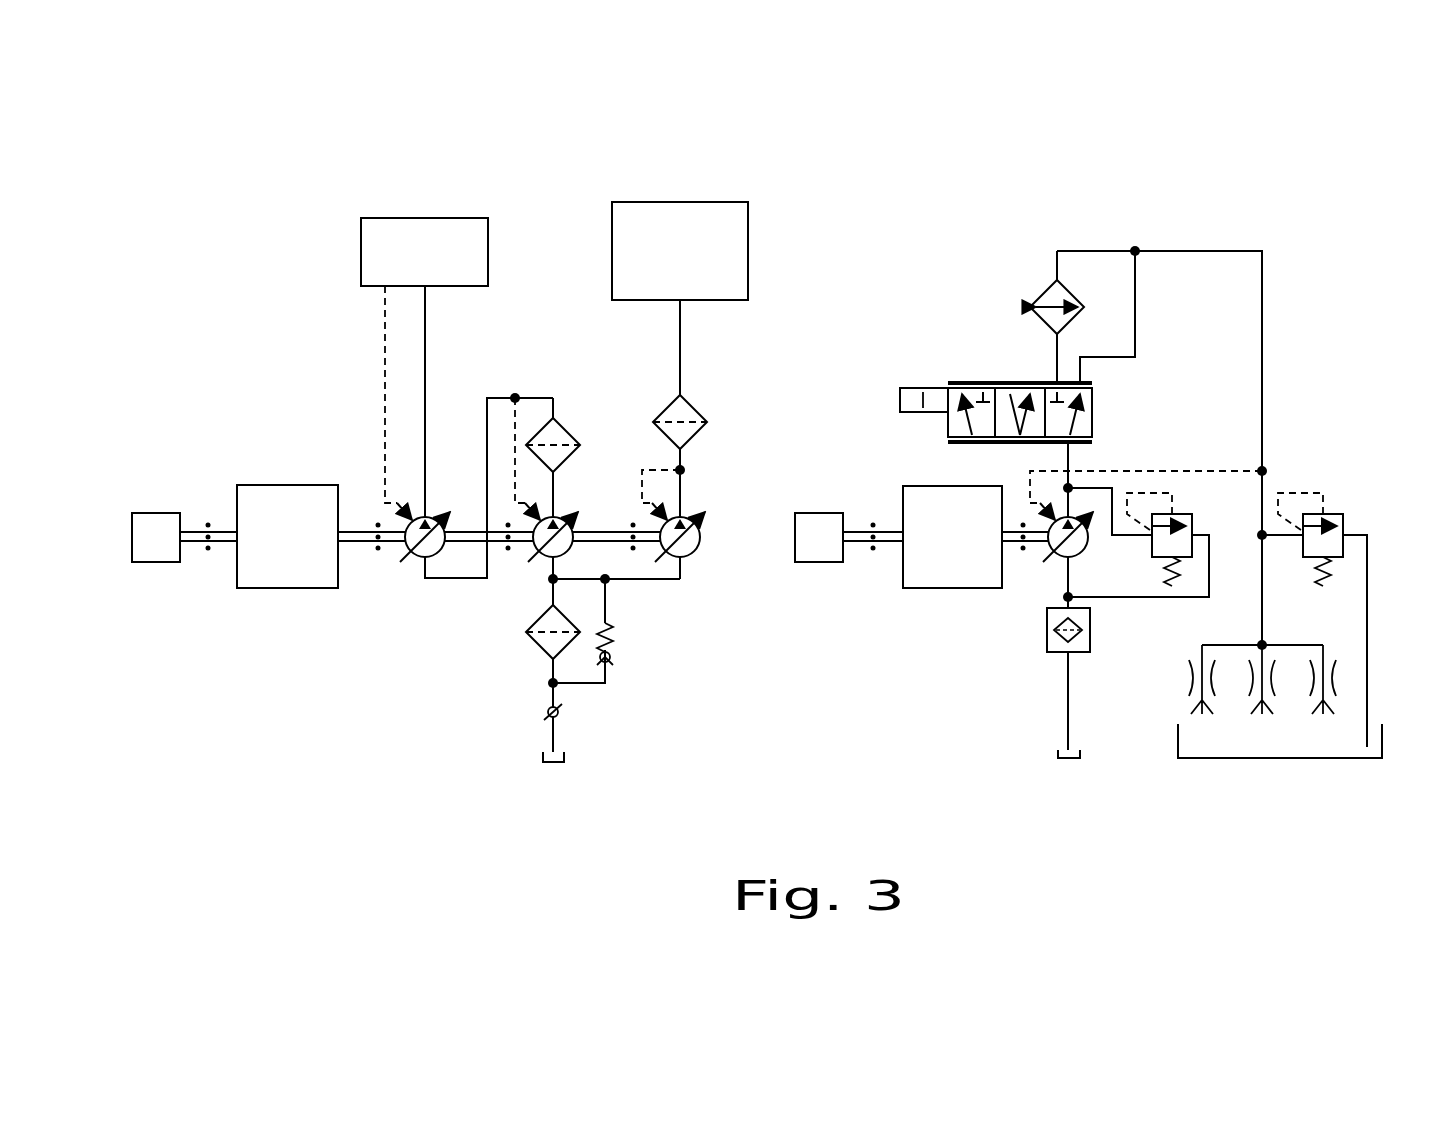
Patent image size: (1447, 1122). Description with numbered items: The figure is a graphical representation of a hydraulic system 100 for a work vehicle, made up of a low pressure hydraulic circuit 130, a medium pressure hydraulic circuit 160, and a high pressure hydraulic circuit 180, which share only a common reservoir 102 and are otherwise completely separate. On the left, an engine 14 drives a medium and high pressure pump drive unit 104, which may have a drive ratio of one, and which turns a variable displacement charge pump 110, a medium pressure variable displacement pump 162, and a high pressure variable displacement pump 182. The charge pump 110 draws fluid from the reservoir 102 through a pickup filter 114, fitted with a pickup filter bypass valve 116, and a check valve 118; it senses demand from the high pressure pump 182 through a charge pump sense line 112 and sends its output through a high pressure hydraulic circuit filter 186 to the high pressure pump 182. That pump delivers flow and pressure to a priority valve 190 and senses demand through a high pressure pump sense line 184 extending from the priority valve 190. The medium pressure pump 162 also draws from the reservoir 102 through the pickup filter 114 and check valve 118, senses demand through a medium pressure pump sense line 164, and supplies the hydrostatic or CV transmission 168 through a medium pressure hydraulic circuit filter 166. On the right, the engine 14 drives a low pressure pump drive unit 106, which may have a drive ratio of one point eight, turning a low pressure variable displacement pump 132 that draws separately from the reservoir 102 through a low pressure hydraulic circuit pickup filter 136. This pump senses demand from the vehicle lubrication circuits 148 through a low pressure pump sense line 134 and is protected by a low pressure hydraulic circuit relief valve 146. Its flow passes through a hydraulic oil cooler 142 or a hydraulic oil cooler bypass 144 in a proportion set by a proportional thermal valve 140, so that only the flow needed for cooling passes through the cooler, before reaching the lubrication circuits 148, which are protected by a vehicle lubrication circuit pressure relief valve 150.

The engine 14 is at (150, 512).
The hydraulic system 100 is at (921, 190).
The reservoir 102 is at (548, 762).
The medium and high pressure pump drive unit 104 is at (283, 485).
The low pressure pump drive unit 106 is at (915, 485).
The variable displacement charge pump 110 is at (540, 572).
The charge pump sense line 112 is at (514, 418).
The pickup filter 114 is at (535, 645).
The pickup filter bypass valve 116 is at (612, 662).
The check valve 118 is at (548, 711).
The low pressure hydraulic circuit 130 is at (1198, 207).
The low pressure variable displacement pump 132 is at (1055, 560).
The low pressure pump sense line 134 is at (1152, 470).
The low pressure hydraulic circuit pickup filter 136 is at (1052, 652).
The proportional thermal valve 140 is at (975, 381).
The hydraulic oil cooler 142 is at (1045, 292).
The hydraulic oil cooler bypass 144 is at (1135, 296).
The low pressure hydraulic circuit relief valve 146 is at (1185, 514).
The vehicle lubrication circuits 148 is at (1325, 652).
The vehicle lubrication circuit pressure relief valve 150 is at (1340, 514).
The medium pressure hydraulic circuit 160 is at (663, 183).
The medium pressure variable displacement pump 162 is at (695, 555).
The medium pressure pump sense line 164 is at (655, 470).
The medium pressure hydraulic circuit filter 166 is at (692, 410).
The hydrostatic or CV transmission 168 is at (698, 202).
The high pressure hydraulic circuit 180 is at (381, 195).
The high pressure variable displacement pump 182 is at (415, 572).
The high pressure pump sense line 184 is at (385, 344).
The high pressure hydraulic circuit filter 186 is at (565, 432).
The priority valve 190 is at (427, 218).